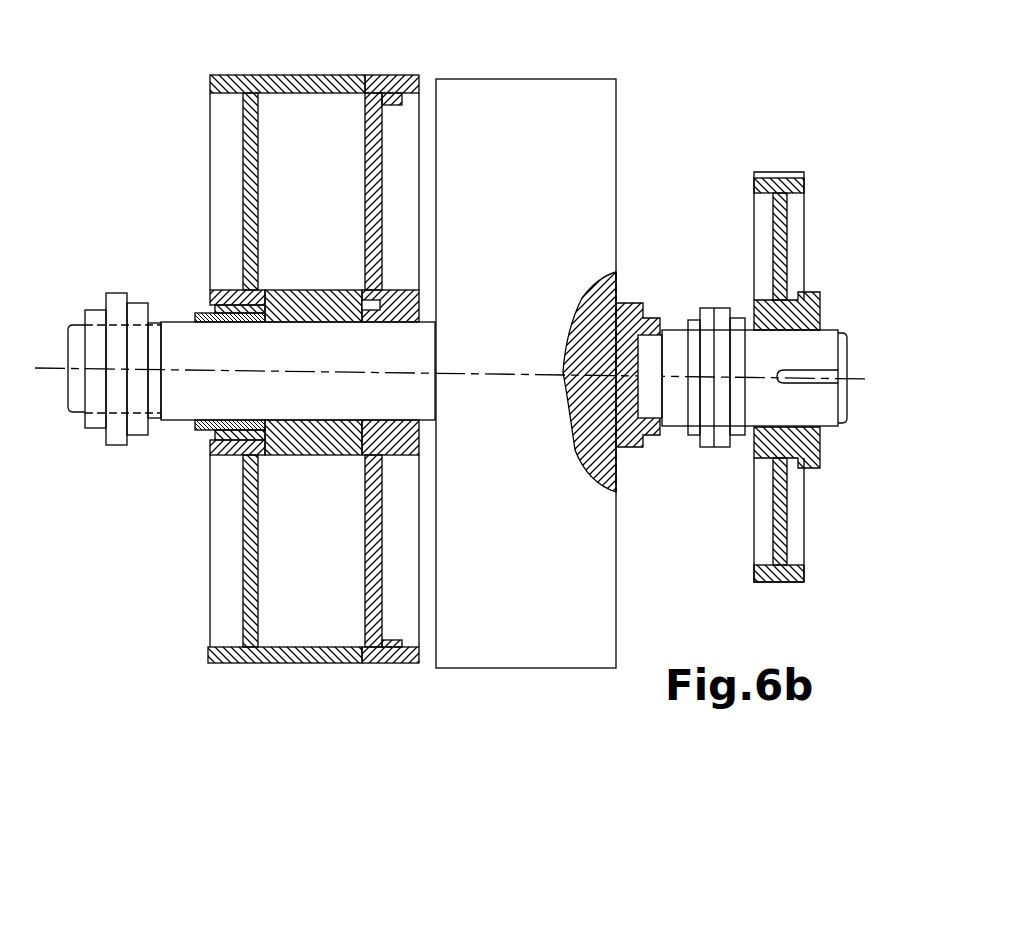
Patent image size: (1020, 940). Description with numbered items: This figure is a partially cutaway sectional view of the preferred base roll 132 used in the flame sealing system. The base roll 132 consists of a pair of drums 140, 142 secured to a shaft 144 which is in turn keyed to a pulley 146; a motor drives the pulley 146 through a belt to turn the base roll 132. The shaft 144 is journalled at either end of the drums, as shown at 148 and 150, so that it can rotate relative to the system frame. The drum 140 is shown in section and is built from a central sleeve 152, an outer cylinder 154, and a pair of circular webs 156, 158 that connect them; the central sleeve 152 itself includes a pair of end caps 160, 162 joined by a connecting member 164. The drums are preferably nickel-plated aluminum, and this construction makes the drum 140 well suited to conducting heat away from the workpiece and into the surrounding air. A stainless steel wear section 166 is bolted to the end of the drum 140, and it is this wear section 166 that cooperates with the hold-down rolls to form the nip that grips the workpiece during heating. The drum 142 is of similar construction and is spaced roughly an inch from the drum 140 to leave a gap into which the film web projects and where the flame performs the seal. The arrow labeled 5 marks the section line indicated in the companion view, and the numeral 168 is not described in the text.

The section arrow 5 is at (428, 82).
The base roll 132 is at (688, 170).
The drum 140 is at (210, 128).
The drum 142 is at (553, 212).
The shaft 144 is at (68, 385).
The pulley 146 is at (752, 538).
The journal 148 is at (148, 428).
The journal 150 is at (718, 450).
The central sleeve 152 is at (288, 455).
The outer cylinder 154 is at (237, 664).
The circular web 156 is at (242, 620).
The circular web 158 is at (364, 507).
The end cap 160 is at (212, 298).
The end cap 162 is at (370, 302).
The connecting member 164 is at (306, 300).
The wear section 166 is at (388, 667).
The retaining tab 168 is at (395, 641).